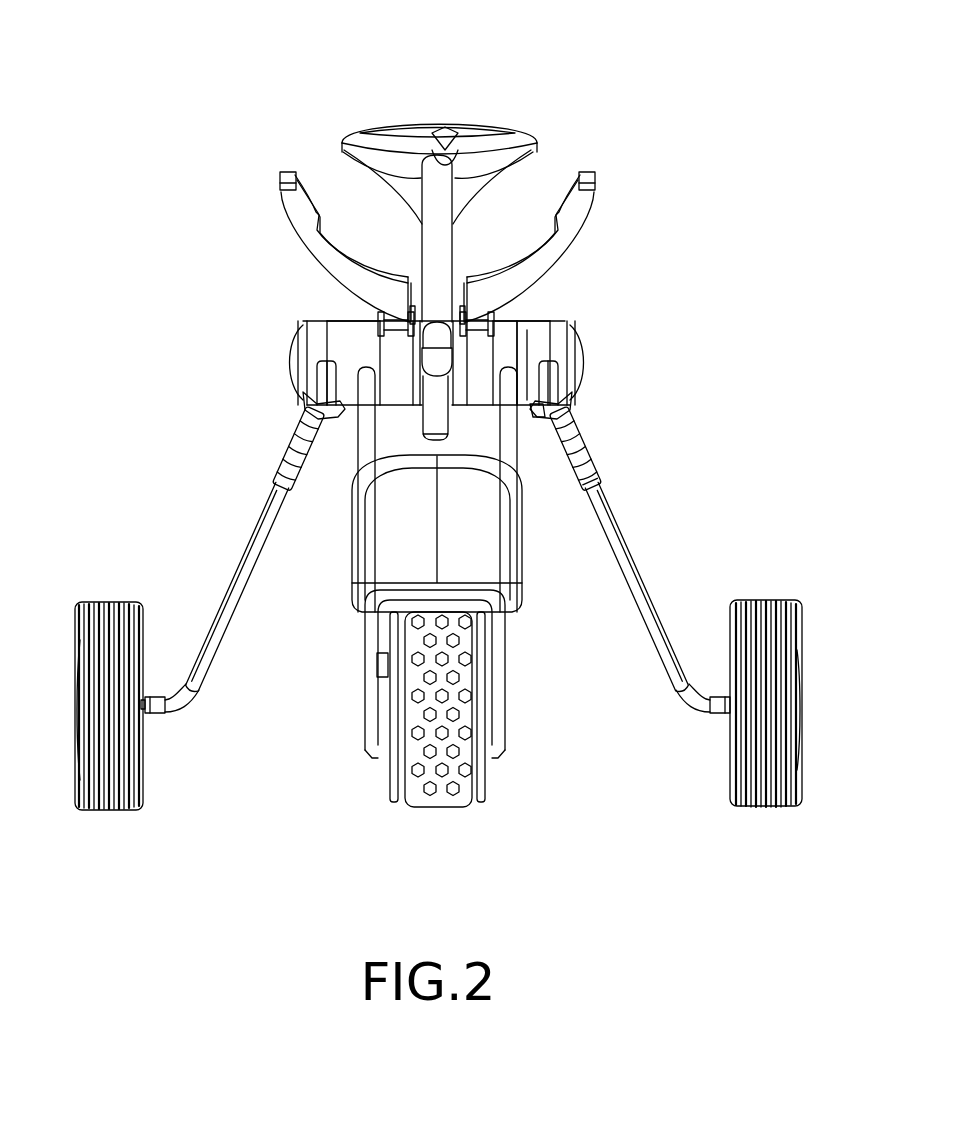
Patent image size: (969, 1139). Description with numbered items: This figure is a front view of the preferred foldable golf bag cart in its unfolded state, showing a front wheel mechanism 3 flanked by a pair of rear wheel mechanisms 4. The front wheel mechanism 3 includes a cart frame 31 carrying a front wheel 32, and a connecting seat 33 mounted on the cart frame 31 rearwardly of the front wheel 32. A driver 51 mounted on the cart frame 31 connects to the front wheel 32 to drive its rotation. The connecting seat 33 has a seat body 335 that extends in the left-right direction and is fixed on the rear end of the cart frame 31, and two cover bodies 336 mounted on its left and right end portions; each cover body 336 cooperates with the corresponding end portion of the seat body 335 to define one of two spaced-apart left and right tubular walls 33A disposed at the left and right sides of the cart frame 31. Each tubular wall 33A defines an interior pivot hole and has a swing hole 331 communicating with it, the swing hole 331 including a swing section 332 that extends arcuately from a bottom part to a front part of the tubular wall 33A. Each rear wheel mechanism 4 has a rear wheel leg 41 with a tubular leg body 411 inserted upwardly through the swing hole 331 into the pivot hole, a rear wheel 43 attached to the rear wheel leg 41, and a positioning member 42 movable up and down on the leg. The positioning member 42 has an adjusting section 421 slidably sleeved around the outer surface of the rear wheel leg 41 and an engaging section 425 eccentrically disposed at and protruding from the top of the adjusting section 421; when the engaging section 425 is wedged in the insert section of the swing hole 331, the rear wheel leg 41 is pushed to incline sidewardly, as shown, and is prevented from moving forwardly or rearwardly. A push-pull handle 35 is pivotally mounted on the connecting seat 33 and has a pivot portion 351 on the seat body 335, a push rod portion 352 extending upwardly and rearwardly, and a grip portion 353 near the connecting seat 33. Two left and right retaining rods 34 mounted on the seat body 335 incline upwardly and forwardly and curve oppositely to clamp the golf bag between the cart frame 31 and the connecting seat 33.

The front wheel mechanism 3 is at (441, 722).
The cart frame 31 is at (500, 697).
The front wheel 32 is at (470, 800).
The connecting seat 33 is at (443, 300).
The tubular walls 33A is at (323, 324).
The swing hole 331 is at (320, 373).
The swing section 332 is at (330, 387).
The seat body 335 is at (527, 330).
The cover bodies 336 is at (294, 357).
The retaining rods 34 is at (297, 213).
The push-pull handle 35 is at (433, 120).
The pivot portion 351 is at (454, 240).
The push rod portion 352 is at (421, 237).
The grip portion 353 is at (433, 407).
The rear wheel mechanisms 4 is at (250, 562).
The rear wheel leg 41 is at (644, 559).
The tubular leg body 411 is at (640, 588).
The positioning member 42 is at (597, 462).
The adjusting section 421 is at (588, 478).
The engaging section 425 is at (533, 412).
The rear wheel 43 is at (777, 773).
The driver 51 is at (378, 563).